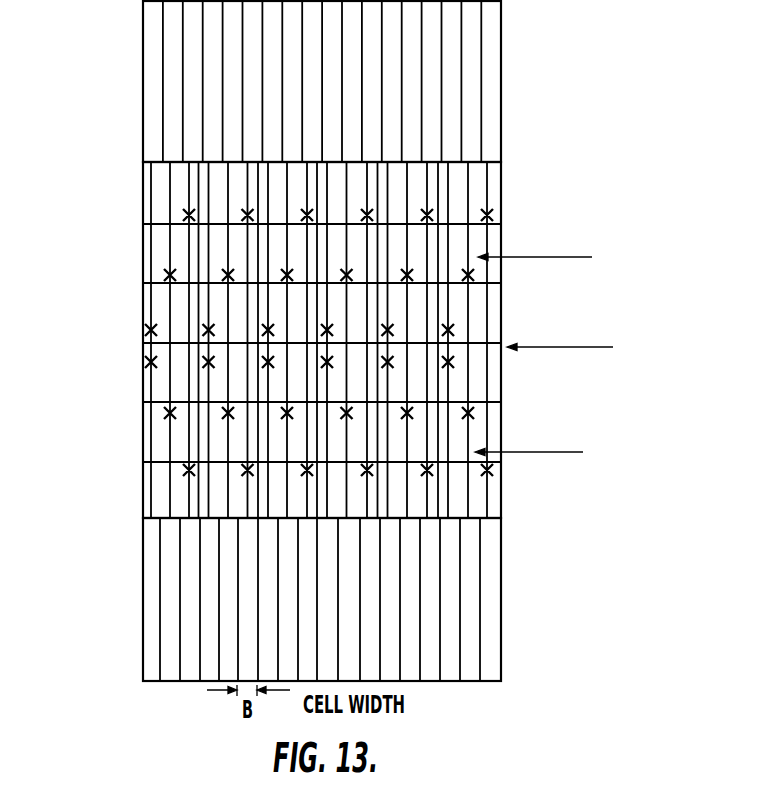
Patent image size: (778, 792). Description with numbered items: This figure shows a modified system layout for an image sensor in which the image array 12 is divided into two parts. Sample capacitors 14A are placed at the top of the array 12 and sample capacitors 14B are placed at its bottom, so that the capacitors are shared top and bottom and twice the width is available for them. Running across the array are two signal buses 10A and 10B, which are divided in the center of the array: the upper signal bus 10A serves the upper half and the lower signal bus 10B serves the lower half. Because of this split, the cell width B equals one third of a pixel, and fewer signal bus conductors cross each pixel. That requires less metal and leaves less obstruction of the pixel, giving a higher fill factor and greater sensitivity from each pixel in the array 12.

The sample capacitors 14A is at (113, 0).
The sample capacitors 14B is at (112, 520).
The array 12 is at (326, 340).
The signal bus 10A is at (472, 181).
The signal bus 10B is at (468, 496).